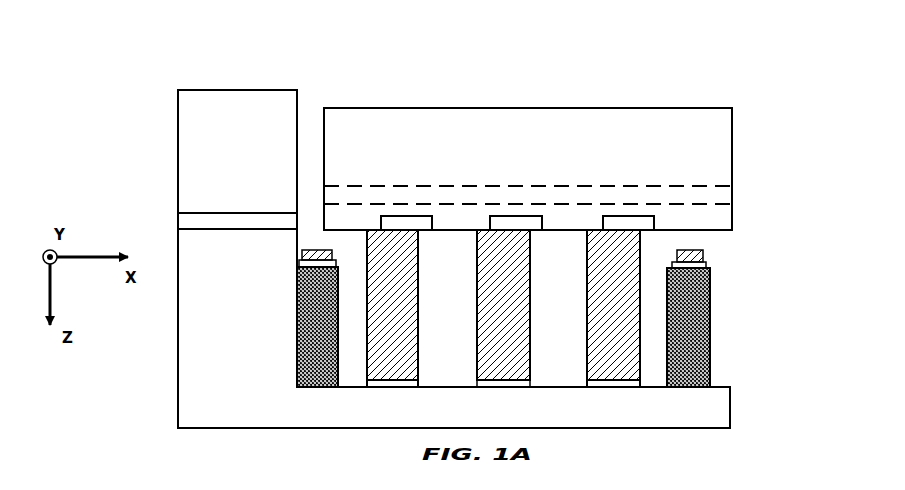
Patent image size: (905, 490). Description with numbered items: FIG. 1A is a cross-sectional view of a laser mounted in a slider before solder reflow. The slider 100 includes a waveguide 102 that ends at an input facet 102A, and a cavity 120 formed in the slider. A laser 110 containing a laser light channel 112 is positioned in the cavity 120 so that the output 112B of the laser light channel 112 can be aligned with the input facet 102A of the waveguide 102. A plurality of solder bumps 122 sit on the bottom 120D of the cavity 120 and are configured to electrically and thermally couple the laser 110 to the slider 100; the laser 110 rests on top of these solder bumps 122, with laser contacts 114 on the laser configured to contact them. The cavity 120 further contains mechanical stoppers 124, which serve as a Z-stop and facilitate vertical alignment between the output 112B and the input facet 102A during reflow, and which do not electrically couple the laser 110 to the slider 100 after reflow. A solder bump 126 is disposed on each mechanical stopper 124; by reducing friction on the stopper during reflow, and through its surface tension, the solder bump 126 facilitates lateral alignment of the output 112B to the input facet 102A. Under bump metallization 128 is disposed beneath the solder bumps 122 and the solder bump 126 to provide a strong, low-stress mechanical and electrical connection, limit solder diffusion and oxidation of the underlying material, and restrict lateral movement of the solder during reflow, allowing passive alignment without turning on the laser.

The slider 100 is at (216, 370).
The waveguide 102 is at (178, 230).
The input facet 102A is at (297, 221).
The laser 110 is at (700, 127).
The laser light channel 112 is at (707, 194).
The output 112B is at (325, 196).
The laser contacts 114 is at (402, 225).
The cavity 120 is at (568, 282).
The bottom of the cavity 120D is at (553, 389).
The solder bumps 122 is at (515, 338).
The mechanical stopper 124 is at (700, 370).
The solder bump 126 is at (706, 256).
The under bump metallization 128 is at (706, 265).